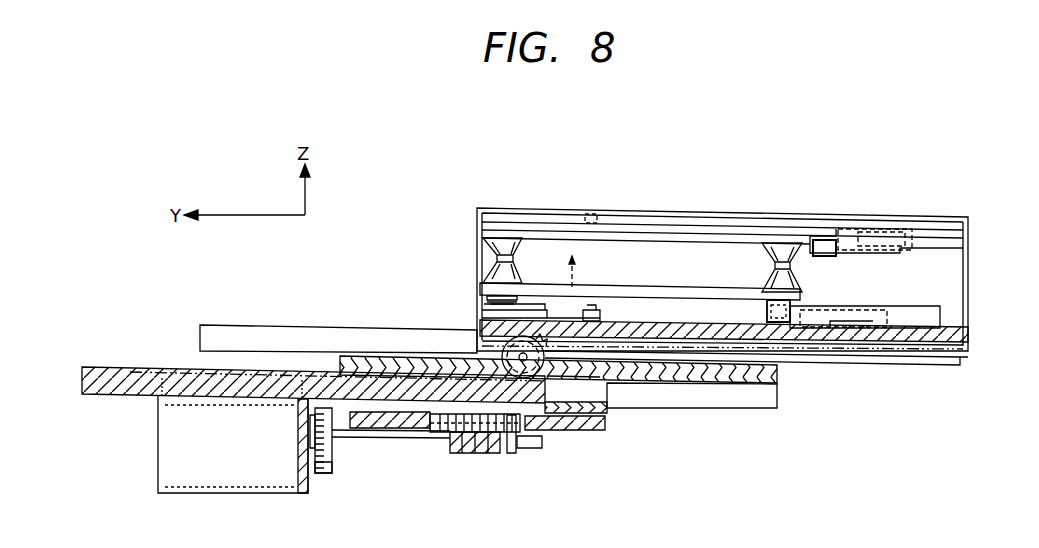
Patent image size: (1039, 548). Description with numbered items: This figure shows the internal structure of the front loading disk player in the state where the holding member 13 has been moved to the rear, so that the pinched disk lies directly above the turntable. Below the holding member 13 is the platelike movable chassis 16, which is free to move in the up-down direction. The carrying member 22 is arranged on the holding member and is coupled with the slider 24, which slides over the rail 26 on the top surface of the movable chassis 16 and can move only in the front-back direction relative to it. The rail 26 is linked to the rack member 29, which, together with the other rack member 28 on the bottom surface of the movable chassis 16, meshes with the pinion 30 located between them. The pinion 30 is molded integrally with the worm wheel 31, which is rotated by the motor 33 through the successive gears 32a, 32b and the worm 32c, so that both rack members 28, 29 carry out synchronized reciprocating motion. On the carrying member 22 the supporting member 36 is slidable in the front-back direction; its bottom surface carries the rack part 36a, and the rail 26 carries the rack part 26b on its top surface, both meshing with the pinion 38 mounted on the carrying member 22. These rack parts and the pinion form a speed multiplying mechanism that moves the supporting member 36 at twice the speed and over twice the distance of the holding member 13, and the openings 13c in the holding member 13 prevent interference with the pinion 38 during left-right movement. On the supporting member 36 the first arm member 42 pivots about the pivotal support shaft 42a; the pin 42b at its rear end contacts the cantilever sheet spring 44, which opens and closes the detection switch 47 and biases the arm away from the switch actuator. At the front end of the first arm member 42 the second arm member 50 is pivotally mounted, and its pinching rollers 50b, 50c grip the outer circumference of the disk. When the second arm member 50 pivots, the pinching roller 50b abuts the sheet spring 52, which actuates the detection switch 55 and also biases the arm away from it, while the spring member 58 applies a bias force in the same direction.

The holding member 13 is at (780, 375).
The openings 13c is at (580, 375).
The movable chassis 16 is at (565, 385).
The carrying member 22 is at (206, 334).
The slider 24 is at (745, 400).
The rail 26 is at (145, 387).
The rack part 26b is at (126, 370).
The rack member 28 is at (600, 424).
The rack member 29 is at (395, 420).
The pinion 30 is at (446, 424).
The worm wheel 31 is at (526, 440).
The gear 32a is at (330, 450).
The gear 32b is at (330, 474).
The worm 32c is at (482, 452).
The motor 33 is at (172, 472).
The supporting member 36 is at (955, 286).
The rack part 36a is at (830, 348).
The pinion 38 is at (520, 352).
The first arm member 42 is at (480, 222).
The pivotal support shaft 42a is at (592, 214).
The pin 42b is at (830, 237).
The sheet spring 44 is at (850, 240).
The detection switch 47 is at (905, 230).
The second arm member 50 is at (482, 231).
The pinching roller 50b is at (775, 266).
The pinching roller 50c is at (497, 258).
The sheet spring 52 is at (800, 304).
The detection switch 55 is at (872, 310).
The spring member 58 is at (487, 298).